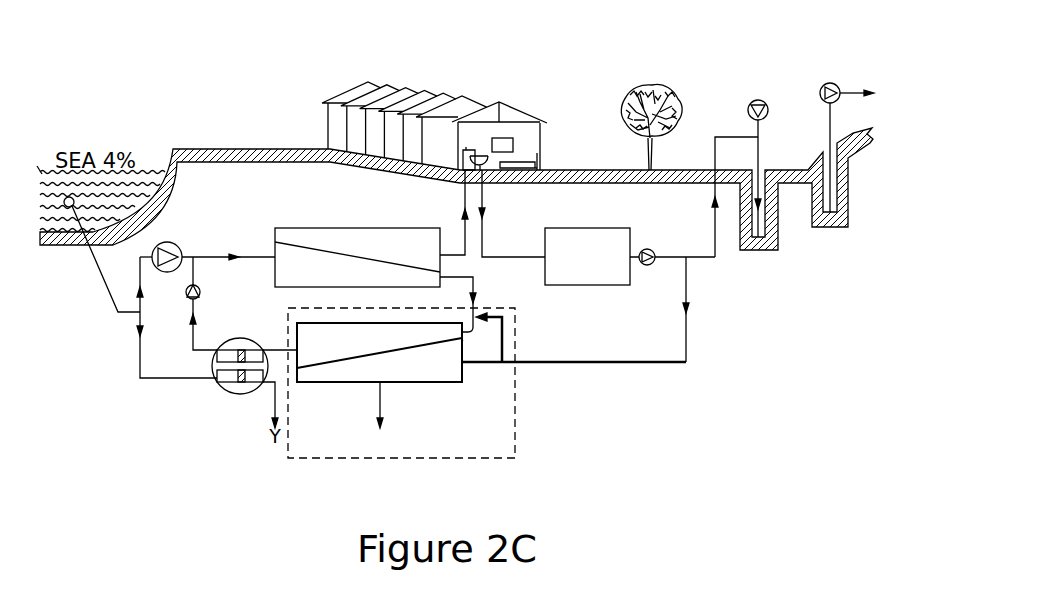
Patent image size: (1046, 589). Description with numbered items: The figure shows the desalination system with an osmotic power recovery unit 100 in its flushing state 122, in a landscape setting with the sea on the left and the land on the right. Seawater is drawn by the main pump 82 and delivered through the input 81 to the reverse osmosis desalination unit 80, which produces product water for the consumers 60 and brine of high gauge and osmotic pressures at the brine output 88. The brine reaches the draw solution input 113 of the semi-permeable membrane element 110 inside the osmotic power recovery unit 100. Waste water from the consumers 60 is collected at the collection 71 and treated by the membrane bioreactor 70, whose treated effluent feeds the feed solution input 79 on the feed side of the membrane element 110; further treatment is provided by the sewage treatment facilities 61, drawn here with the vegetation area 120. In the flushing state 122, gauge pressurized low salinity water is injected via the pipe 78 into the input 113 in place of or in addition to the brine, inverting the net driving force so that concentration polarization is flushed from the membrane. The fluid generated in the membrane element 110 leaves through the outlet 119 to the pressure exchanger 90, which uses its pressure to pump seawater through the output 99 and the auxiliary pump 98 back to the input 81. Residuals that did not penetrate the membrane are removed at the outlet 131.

The consumers 60 is at (510, 113).
The sewage treatment facilities 61 is at (818, 49).
The membrane bioreactor 70 is at (580, 228).
The waste water collection 71 is at (483, 193).
The gauge pressurized low salinity water source 78 is at (503, 333).
The feed solution input 79 is at (603, 362).
The reverse osmosis desalination unit 80 is at (325, 228).
The input 81 is at (210, 253).
The main pump 82 is at (167, 242).
The brine output 88 is at (477, 280).
The pressure exchanger 90 is at (237, 392).
The auxiliary pump 98 is at (202, 290).
The pressure exchanger output 99 is at (192, 348).
The osmotic power recovery unit 100 is at (515, 420).
The semi-permeable membrane element 110 is at (407, 382).
The draw solution input 113 is at (463, 341).
The outlet 119 is at (278, 348).
The irrigation area 120 is at (675, 92).
The flushing state 122 is at (651, 127).
The outlet 131 is at (377, 397).